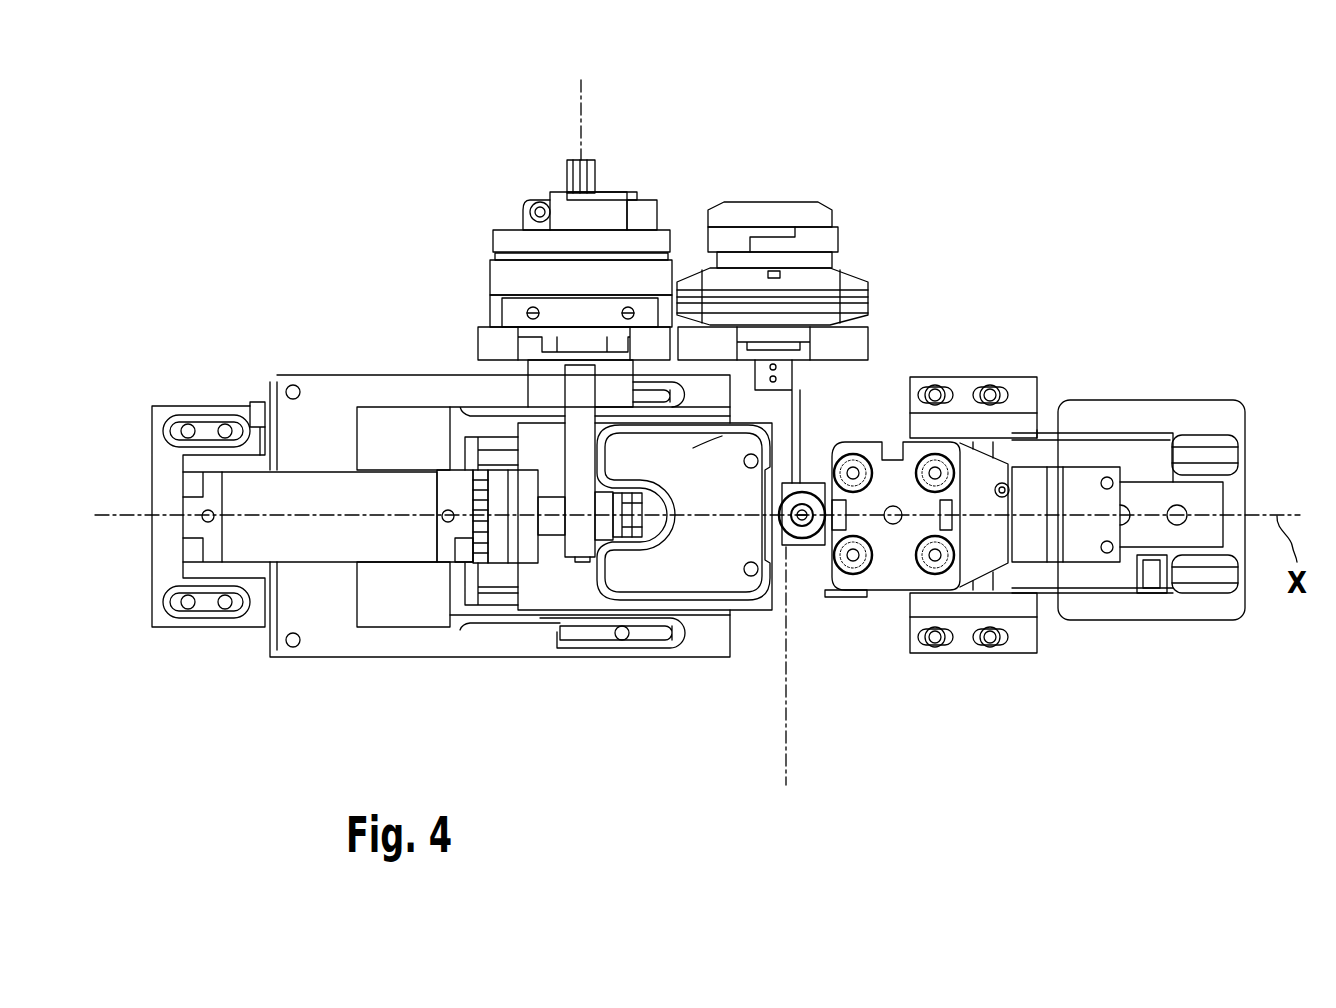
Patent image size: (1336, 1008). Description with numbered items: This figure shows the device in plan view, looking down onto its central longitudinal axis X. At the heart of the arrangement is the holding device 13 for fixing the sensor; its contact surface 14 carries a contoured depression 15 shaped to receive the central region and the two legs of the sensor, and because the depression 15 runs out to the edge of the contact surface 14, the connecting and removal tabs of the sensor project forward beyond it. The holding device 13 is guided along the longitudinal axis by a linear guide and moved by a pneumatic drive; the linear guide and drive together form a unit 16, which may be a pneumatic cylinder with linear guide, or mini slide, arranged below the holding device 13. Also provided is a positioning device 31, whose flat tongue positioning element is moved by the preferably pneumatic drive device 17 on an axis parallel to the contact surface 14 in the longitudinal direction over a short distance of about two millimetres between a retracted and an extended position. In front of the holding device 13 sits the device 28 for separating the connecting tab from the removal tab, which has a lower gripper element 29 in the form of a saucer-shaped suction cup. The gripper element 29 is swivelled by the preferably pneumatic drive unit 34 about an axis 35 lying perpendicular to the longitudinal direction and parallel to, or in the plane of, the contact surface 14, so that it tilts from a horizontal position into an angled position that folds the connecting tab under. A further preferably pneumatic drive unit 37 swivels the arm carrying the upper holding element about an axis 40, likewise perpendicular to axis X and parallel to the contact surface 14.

The holding device 13 is at (758, 618).
The contact surface 14 is at (698, 578).
The contoured depression 15 is at (693, 448).
The unit 16 is at (603, 667).
The drive device 17 is at (333, 500).
The device 28 is at (805, 560).
The gripper element 29 is at (805, 497).
The positioning device 31 is at (652, 526).
The drive unit 34 is at (780, 170).
The axis 35 is at (787, 766).
The drive unit 37 is at (531, 170).
The axis 40 is at (583, 106).